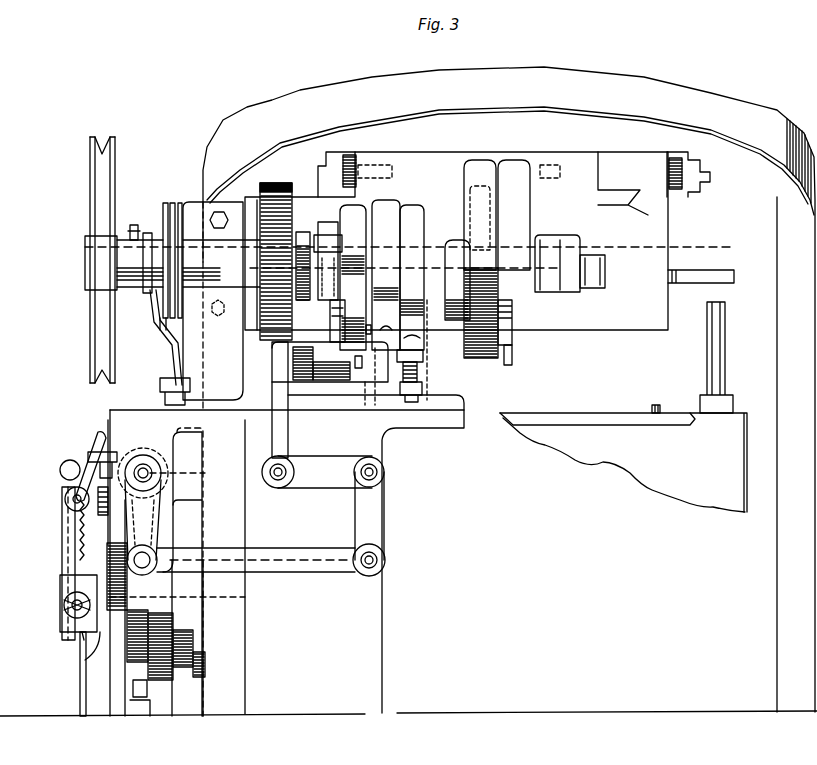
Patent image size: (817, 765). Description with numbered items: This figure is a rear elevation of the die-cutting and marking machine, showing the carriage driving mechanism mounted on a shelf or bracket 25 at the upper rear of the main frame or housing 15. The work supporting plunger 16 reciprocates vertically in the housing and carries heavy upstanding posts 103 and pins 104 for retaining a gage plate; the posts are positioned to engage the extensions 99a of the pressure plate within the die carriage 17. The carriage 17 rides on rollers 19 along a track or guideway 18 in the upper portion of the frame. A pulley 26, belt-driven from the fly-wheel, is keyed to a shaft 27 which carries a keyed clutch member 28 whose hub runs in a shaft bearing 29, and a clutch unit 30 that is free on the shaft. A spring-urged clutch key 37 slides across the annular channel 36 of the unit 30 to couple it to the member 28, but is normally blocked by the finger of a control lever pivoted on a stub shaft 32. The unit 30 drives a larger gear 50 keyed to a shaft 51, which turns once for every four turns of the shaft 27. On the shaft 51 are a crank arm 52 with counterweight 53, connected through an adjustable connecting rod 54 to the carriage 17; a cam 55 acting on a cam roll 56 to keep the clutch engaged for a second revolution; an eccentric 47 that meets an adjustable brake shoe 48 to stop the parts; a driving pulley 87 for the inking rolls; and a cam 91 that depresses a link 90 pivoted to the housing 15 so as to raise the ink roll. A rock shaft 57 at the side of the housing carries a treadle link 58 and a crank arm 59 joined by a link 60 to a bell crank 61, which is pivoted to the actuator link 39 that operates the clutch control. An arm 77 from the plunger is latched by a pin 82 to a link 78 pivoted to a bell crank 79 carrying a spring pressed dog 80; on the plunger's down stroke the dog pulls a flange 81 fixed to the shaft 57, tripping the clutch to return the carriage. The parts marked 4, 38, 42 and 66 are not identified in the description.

The main frame or housing 15 is at (712, 100).
The work supporting plunger 16 is at (645, 428).
The die holder or carriage 17 is at (655, 292).
The track or guideway 18 is at (333, 160).
The rollers 19 is at (356, 158).
The shelf or bracket 25 is at (450, 420).
The pulley 26 is at (95, 188).
The shaft 27 is at (88, 268).
The clutch member 28 is at (386, 210).
The shaft bearing 29 is at (452, 246).
The clutch unit 30 is at (350, 214).
The stub shaft 32 is at (424, 388).
The annular channel 36 is at (330, 238).
The clutch key 37 is at (310, 212).
The bearing block 38 is at (330, 378).
The actuator link 39 is at (282, 446).
The frame 4 is at (514, 365).
The bracket 42 is at (272, 352).
The eccentric 47 is at (497, 305).
The brake shoe 48 is at (425, 360).
The larger gear 50 is at (280, 186).
The shaft 51 is at (395, 398).
The crank arm 52 is at (528, 240).
The counterweight 53 is at (500, 358).
The adjustable connecting rod 54 is at (576, 246).
The cam 55 is at (392, 242).
The cam roll 56 is at (368, 334).
The rock shaft 57 is at (168, 475).
The treadle link 58 is at (79, 702).
The crank arm 59 is at (158, 525).
The link 60 is at (322, 568).
The bell crank 61 is at (376, 520).
The nut 66 is at (163, 385).
The arm 77 is at (110, 625).
The link 78 is at (68, 566).
The bell crank 79 is at (72, 487).
The spring pressed dog 80 is at (90, 457).
The plate or flange 81 is at (98, 446).
The pin 82 is at (66, 604).
The driving pulley 87 is at (165, 212).
The link 90 is at (158, 356).
The cam 91 is at (142, 276).
The extensions 99a is at (715, 270).
The upstanding posts 103 is at (722, 372).
The pins 104 is at (648, 406).